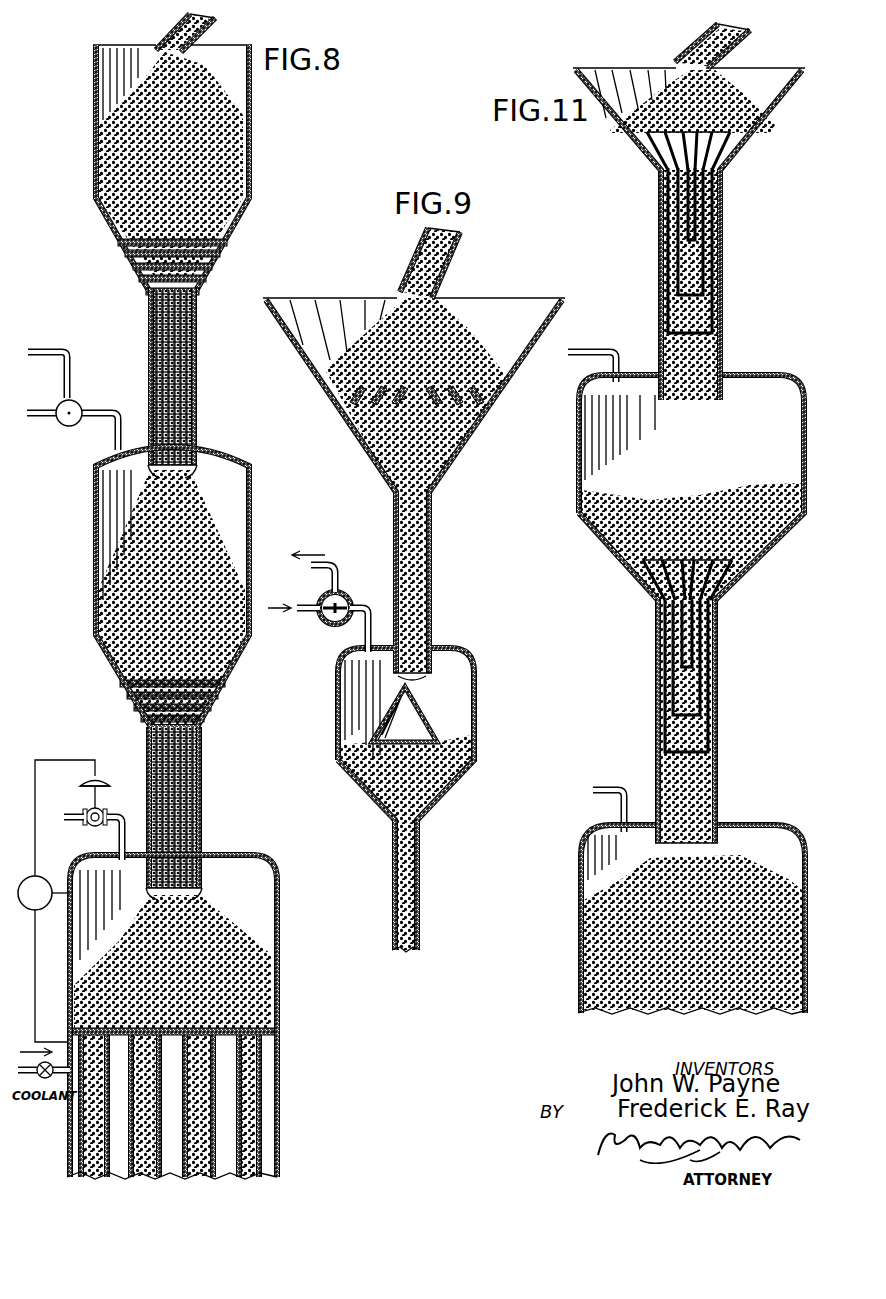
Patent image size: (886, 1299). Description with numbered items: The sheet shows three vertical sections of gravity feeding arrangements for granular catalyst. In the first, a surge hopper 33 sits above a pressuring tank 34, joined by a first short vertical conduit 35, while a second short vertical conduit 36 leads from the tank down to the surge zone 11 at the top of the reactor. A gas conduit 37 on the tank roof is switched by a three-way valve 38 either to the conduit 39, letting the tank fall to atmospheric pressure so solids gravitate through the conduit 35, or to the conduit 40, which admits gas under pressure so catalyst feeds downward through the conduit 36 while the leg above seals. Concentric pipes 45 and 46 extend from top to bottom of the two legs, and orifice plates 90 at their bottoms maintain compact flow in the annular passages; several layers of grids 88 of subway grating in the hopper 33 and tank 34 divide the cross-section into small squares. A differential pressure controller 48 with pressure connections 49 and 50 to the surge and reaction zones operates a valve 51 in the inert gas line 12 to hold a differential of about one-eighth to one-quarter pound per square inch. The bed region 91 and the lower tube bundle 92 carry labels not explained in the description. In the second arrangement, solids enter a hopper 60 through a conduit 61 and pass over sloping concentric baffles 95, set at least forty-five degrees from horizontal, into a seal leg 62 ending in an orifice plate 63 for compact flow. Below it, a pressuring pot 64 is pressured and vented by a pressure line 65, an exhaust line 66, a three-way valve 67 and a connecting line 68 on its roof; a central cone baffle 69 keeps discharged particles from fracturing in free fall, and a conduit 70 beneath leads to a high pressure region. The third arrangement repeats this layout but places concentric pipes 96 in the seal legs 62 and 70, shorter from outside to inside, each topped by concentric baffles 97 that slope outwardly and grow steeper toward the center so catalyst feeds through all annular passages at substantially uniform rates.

In FIG. 8, the surge hopper 33 is at (252, 155).
In FIG. 8, the grids 88 is at (208, 275).
In FIG. 8, the first short vertical conduit 35 is at (195, 376).
In FIG. 8, the concentric pipe 45 is at (199, 323).
In FIG. 8, the conduit 39 is at (55, 350).
In FIG. 8, the three-way valve 38 is at (74, 404).
In FIG. 8, the conduit 40 is at (42, 418).
In FIG. 8, the gas conduit 37 is at (121, 424).
In FIG. 8, the orifice plates 90 is at (192, 470).
In FIG. 8, the pressuring tank 34 is at (196, 587).
In FIG. 8, the concentric pipe 46 is at (186, 770).
In FIG. 8, the second short vertical conduit 36 is at (194, 994).
In FIG. 8, the valve 51 is at (101, 784).
In FIG. 8, the inert gas line 12 is at (121, 820).
In FIG. 11, the inert gas line 12 is at (613, 785).
In FIG. 8, the differential pressure controller 48 is at (46, 877).
In FIG. 8, the pressure connection 49 is at (72, 890).
In FIG. 8, the pressure connection 50 is at (63, 1045).
In FIG. 8, the bed of solids 91 is at (251, 942).
In FIG. 8, the cooling tube bundle 92 is at (290, 1064).
In FIG. 9, the conduit 61 is at (452, 267).
In FIG. 11, the conduit 61 is at (732, 48).
In FIG. 9, the hopper 60 is at (563, 304).
In FIG. 11, the hopper 60 is at (757, 127).
In FIG. 9, the sloping concentric baffles 95 is at (490, 406).
In FIG. 9, the exhaust line 66 is at (340, 546).
In FIG. 9, the three-way valve 67 is at (344, 594).
In FIG. 9, the connecting line 68 is at (369, 610).
In FIG. 11, the connecting line 68 is at (608, 337).
In FIG. 9, the pressure line 65 is at (310, 615).
In FIG. 9, the seal leg 62 is at (433, 629).
In FIG. 11, the seal leg 62 is at (716, 460).
In FIG. 9, the orifice plate 63 is at (418, 680).
In FIG. 9, the cone baffle 69 is at (418, 712).
In FIG. 9, the pressuring pot 64 is at (428, 800).
In FIG. 11, the pressuring pot 64 is at (753, 380).
In FIG. 9, the conduit 70 is at (421, 892).
In FIG. 11, the conduit 70 is at (720, 750).
In FIG. 11, the concentric baffles 97 is at (648, 146).
In FIG. 11, the concentric pipes 96 is at (724, 256).
In FIG. 11, the surge zone 11 is at (577, 928).